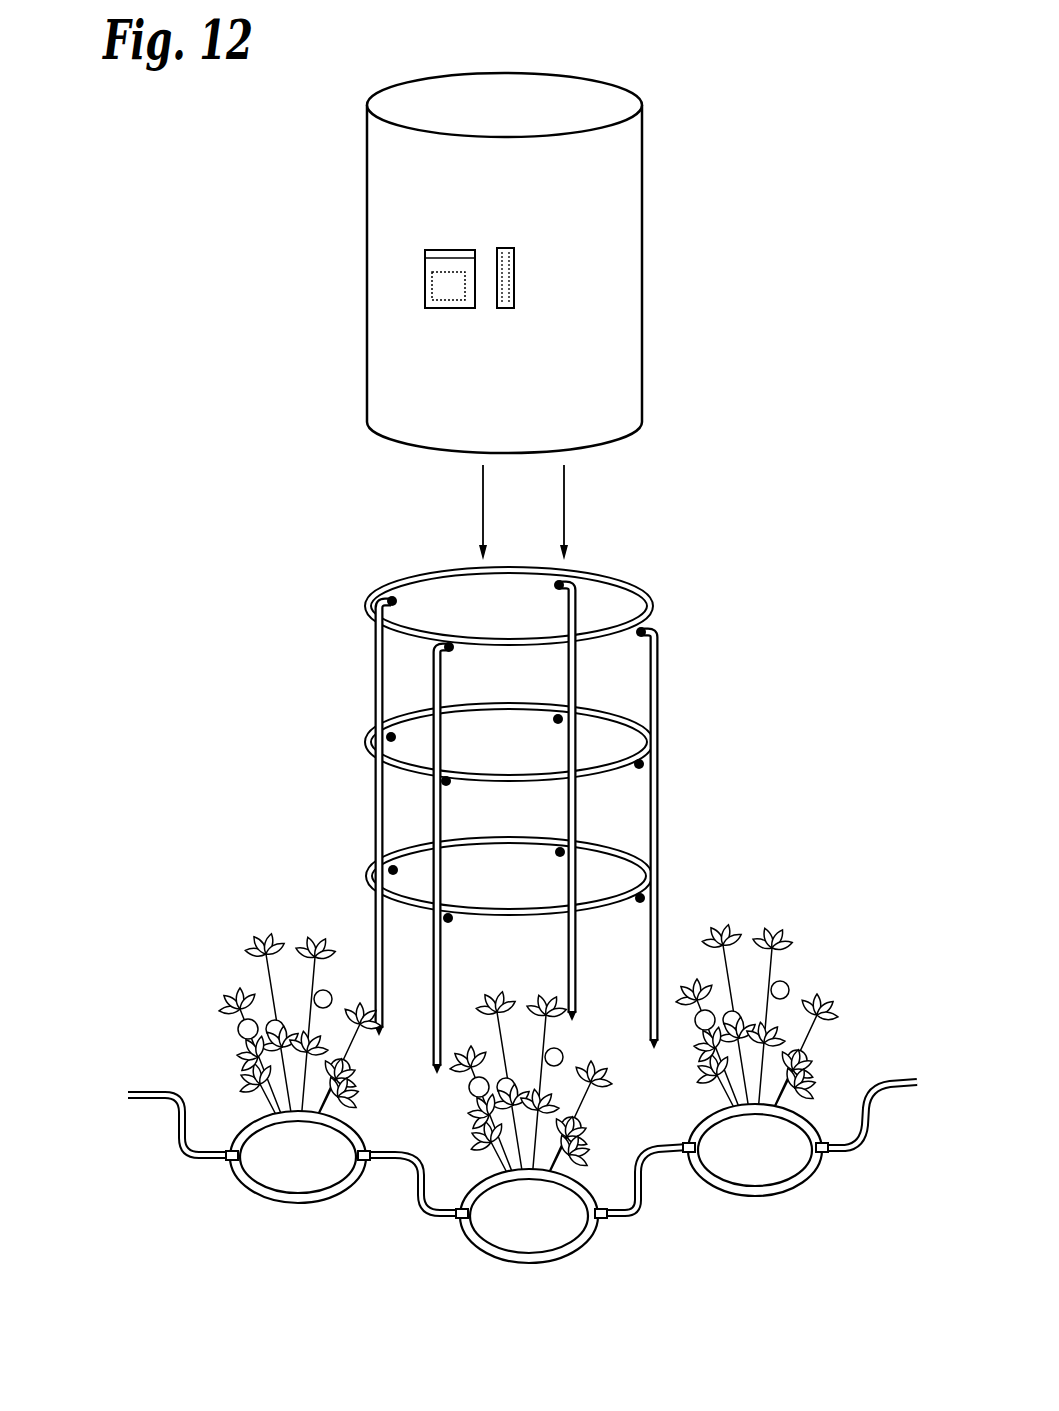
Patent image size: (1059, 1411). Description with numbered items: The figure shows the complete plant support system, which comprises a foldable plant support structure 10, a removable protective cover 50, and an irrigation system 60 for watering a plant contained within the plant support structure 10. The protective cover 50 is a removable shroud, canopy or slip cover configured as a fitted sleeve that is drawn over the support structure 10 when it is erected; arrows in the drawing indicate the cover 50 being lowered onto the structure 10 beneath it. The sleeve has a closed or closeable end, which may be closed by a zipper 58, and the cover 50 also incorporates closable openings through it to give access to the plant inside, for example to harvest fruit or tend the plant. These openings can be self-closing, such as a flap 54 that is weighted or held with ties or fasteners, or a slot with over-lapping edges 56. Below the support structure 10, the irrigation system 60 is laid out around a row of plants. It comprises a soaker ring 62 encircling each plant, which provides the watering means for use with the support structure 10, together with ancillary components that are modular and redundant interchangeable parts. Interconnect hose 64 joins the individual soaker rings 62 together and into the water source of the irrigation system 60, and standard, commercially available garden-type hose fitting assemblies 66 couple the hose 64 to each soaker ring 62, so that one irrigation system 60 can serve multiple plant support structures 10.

The foldable plant support structure 10 is at (663, 790).
The removable protective cover 50 is at (511, 263).
The flap 54 is at (427, 308).
The slot with over-lapping edges 56 is at (497, 248).
The zipper 58 is at (380, 122).
The irrigation system 60 is at (522, 1153).
The soaker ring 62 is at (475, 1245).
The interconnect hose 64 is at (633, 1167).
The hose fitting assembly 66 is at (598, 1220).